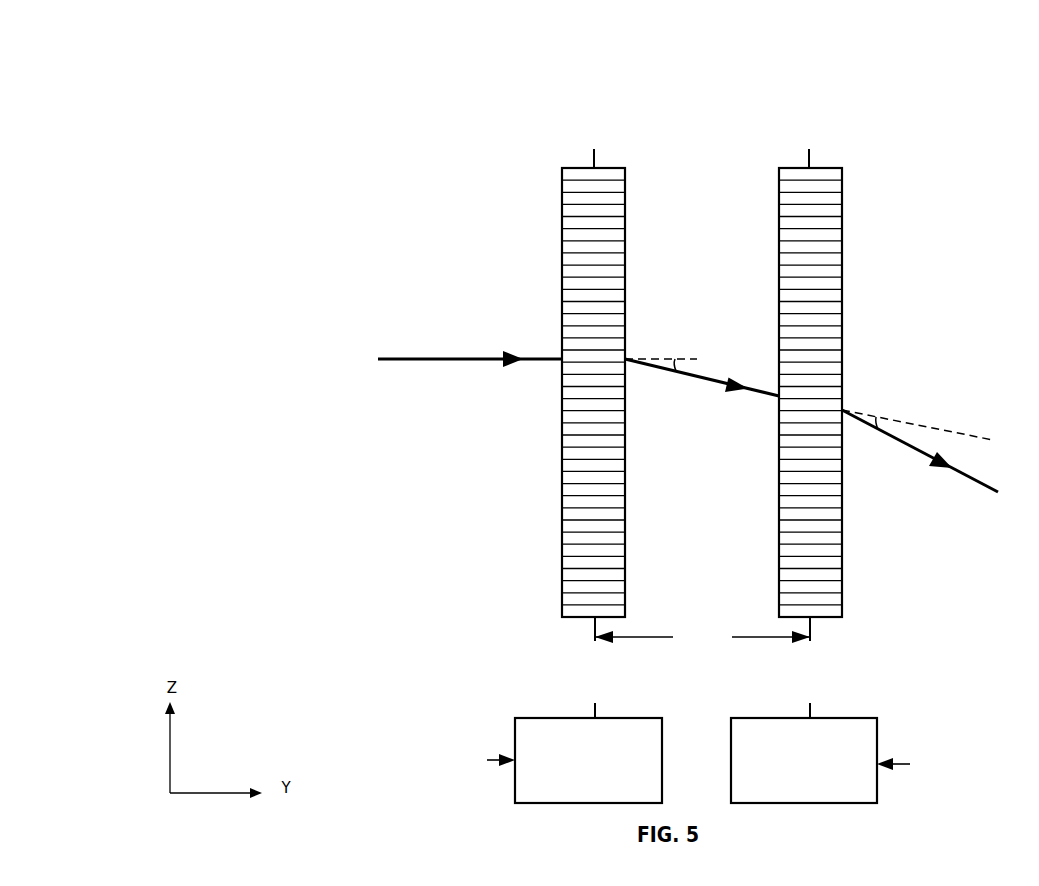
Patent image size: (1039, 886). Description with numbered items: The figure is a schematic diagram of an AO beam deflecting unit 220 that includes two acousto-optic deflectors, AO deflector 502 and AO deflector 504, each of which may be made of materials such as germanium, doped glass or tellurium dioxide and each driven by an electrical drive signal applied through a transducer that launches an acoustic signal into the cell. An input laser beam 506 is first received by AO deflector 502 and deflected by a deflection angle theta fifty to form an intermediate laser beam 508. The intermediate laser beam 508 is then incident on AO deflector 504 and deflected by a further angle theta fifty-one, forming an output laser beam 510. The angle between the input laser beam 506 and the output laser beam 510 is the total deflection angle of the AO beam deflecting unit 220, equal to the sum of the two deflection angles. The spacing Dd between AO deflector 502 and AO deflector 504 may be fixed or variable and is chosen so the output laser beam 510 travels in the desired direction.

The AO beam deflecting unit 220 is at (665, 35).
The AO deflector 502 is at (625, 222).
The AO deflector 504 is at (842, 222).
The input laser beam 506 is at (470, 329).
The intermediate laser beam 508 is at (702, 348).
The output laser beam 510 is at (920, 432).